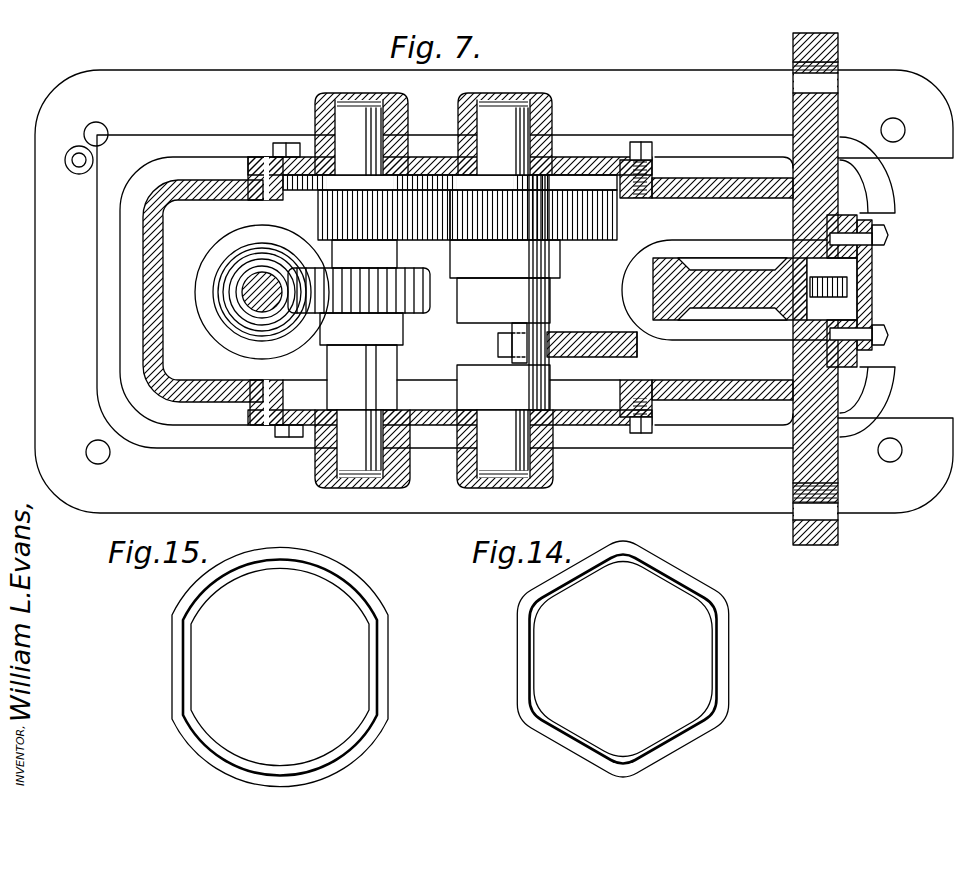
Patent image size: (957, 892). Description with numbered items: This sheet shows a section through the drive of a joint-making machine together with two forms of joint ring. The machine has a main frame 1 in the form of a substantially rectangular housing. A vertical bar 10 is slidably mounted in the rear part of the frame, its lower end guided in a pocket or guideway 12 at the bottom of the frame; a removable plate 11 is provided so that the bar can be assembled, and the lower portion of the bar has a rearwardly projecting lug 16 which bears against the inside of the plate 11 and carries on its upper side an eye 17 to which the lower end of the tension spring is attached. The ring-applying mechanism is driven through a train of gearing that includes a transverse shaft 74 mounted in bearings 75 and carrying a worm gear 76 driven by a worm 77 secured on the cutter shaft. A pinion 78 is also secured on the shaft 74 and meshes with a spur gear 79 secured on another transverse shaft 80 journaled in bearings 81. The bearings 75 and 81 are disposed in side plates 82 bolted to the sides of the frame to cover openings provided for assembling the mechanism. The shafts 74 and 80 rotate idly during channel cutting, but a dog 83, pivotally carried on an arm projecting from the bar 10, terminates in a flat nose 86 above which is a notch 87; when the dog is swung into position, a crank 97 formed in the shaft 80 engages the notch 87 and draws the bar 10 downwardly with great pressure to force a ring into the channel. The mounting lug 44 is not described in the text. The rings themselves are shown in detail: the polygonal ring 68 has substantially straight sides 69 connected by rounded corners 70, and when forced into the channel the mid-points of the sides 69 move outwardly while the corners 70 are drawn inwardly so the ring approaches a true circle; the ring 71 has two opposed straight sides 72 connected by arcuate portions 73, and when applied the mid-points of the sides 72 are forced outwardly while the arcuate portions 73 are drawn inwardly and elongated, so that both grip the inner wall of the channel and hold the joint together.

In FIG. 7, the main frame 1 is at (193, 388).
In FIG. 7, the vertical bar 10 is at (728, 265).
In FIG. 7, the removable plate 11 is at (874, 291).
In FIG. 7, the pocket or guideway 12 is at (672, 246).
In FIG. 7, the rearwardly projecting lug 16 is at (852, 309).
In FIG. 7, the eye 17 is at (833, 288).
In FIG. 7, the mounting lug 44 is at (78, 174).
In FIG. 14, the polygonal ring 68 is at (737, 670).
In FIG. 14, the sides 69 is at (523, 663).
In FIG. 14, the rounded corners 70 is at (528, 715).
In FIG. 15, the ring 71 is at (273, 666).
In FIG. 15, the opposed sides 72 is at (183, 674).
In FIG. 15, the arcuate portions 73 is at (303, 562).
In FIG. 7, the transverse shaft 74 is at (355, 127).
In FIG. 7, the bearings 75 is at (330, 108).
In FIG. 7, the worm gear 76 is at (415, 311).
In FIG. 7, the worm 77 is at (240, 300).
In FIG. 7, the pinion 78 is at (330, 217).
In FIG. 7, the spur gear 79 is at (572, 226).
In FIG. 7, the transverse shaft 80 is at (510, 127).
In FIG. 7, the bearings 81 is at (548, 108).
In FIG. 7, the side plates 82 is at (612, 148).
In FIG. 7, the dog 83 is at (638, 346).
In FIG. 7, the flat nose 86 is at (498, 346).
In FIG. 7, the notch 87 is at (560, 357).
In FIG. 7, the crank 97 is at (530, 336).